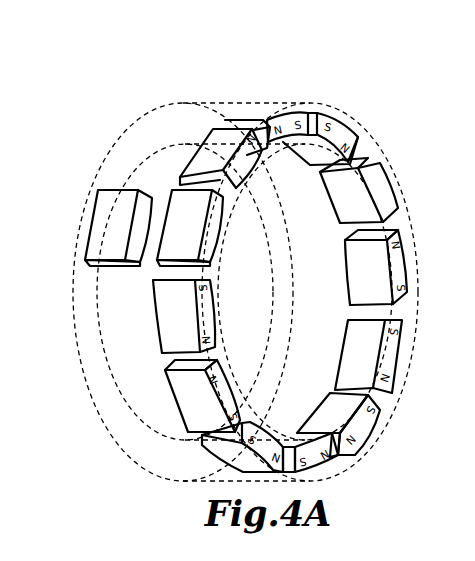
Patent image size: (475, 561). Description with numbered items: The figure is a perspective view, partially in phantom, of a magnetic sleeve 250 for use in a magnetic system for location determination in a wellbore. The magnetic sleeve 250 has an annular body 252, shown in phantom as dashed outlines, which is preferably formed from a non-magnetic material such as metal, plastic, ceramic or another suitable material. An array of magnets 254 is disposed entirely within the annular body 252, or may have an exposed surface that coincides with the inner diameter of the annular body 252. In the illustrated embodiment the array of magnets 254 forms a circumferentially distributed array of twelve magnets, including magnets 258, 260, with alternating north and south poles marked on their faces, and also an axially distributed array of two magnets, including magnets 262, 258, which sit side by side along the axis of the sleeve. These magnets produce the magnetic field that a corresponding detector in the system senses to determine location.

The magnetic sleeve 250 is at (266, 264).
The annular body 252 is at (378, 431).
The array of magnets 254 is at (378, 183).
The magnet 258 is at (172, 213).
The magnet 260 is at (213, 137).
The magnet 262 is at (103, 213).